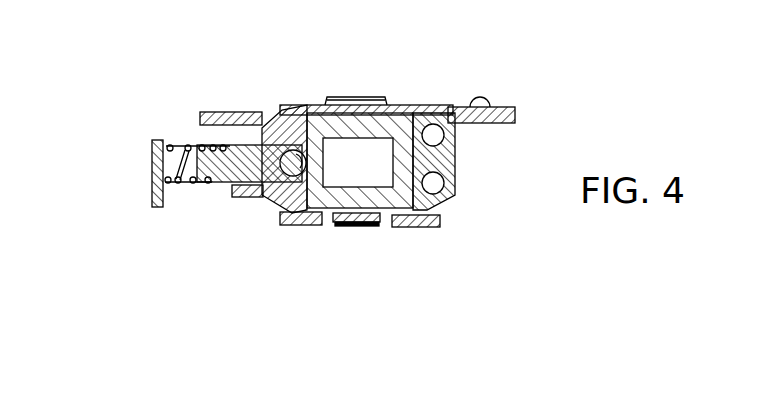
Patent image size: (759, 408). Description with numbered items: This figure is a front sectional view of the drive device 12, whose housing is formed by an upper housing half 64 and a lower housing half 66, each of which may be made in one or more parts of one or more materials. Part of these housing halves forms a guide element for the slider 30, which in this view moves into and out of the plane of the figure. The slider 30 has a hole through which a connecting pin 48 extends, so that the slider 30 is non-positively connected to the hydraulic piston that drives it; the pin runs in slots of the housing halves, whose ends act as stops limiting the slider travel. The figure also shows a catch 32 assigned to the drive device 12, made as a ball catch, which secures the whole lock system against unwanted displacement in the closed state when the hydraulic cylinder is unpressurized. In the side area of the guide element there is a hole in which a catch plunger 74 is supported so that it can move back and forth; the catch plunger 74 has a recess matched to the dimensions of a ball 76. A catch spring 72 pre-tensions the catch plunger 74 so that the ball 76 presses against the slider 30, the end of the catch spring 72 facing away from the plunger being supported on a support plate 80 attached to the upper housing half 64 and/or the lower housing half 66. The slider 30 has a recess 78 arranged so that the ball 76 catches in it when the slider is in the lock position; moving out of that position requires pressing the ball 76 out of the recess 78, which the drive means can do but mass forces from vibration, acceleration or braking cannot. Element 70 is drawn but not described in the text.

The drive device 12 is at (492, 88).
The slider 30 is at (396, 112).
The catch 32 is at (210, 198).
The connecting pin 48 is at (353, 100).
The upper housing half 64 is at (425, 108).
The lower housing half 66 is at (425, 228).
The seals 70 is at (435, 135).
The catch spring 72 is at (185, 145).
The catch plunger 74 is at (248, 198).
The ball 76 is at (290, 205).
The recess 78 is at (312, 108).
The support plate 80 is at (156, 200).